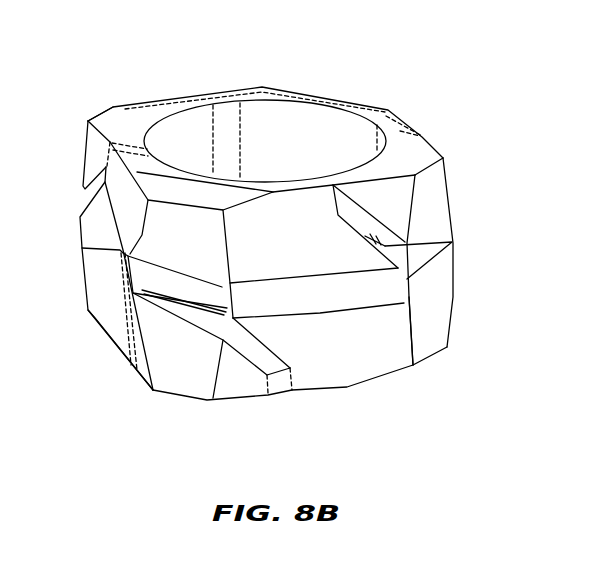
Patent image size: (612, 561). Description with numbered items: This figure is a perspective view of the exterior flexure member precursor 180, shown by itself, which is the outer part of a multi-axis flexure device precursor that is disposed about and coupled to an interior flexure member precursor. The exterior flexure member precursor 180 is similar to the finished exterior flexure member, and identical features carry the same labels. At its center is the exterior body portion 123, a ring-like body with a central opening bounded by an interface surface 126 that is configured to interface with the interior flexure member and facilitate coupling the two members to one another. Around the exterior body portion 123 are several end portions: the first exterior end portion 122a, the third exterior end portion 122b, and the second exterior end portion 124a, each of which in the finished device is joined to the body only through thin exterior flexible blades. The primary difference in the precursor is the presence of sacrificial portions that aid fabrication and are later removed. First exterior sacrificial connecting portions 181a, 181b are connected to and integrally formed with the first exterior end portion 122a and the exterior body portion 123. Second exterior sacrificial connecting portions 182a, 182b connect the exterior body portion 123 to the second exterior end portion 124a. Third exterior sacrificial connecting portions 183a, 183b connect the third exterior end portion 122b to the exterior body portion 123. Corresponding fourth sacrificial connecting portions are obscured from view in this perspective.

The exterior flexure member precursor 180 is at (108, 62).
The interface surface 126 is at (288, 125).
The exterior body portion 123 is at (335, 95).
The first exterior end portion 122a is at (438, 173).
The third exterior end portion 122b is at (100, 112).
The second exterior end portion 124a is at (177, 382).
The first exterior sacrificial connecting portion 181a is at (368, 202).
The first exterior sacrificial connecting portion 181b is at (403, 120).
The second exterior sacrificial connecting portion 182a is at (300, 375).
The second exterior sacrificial connecting portion 182b is at (118, 330).
The third exterior sacrificial connecting portion 183a is at (98, 150).
The third exterior sacrificial connecting portion 183b is at (202, 88).